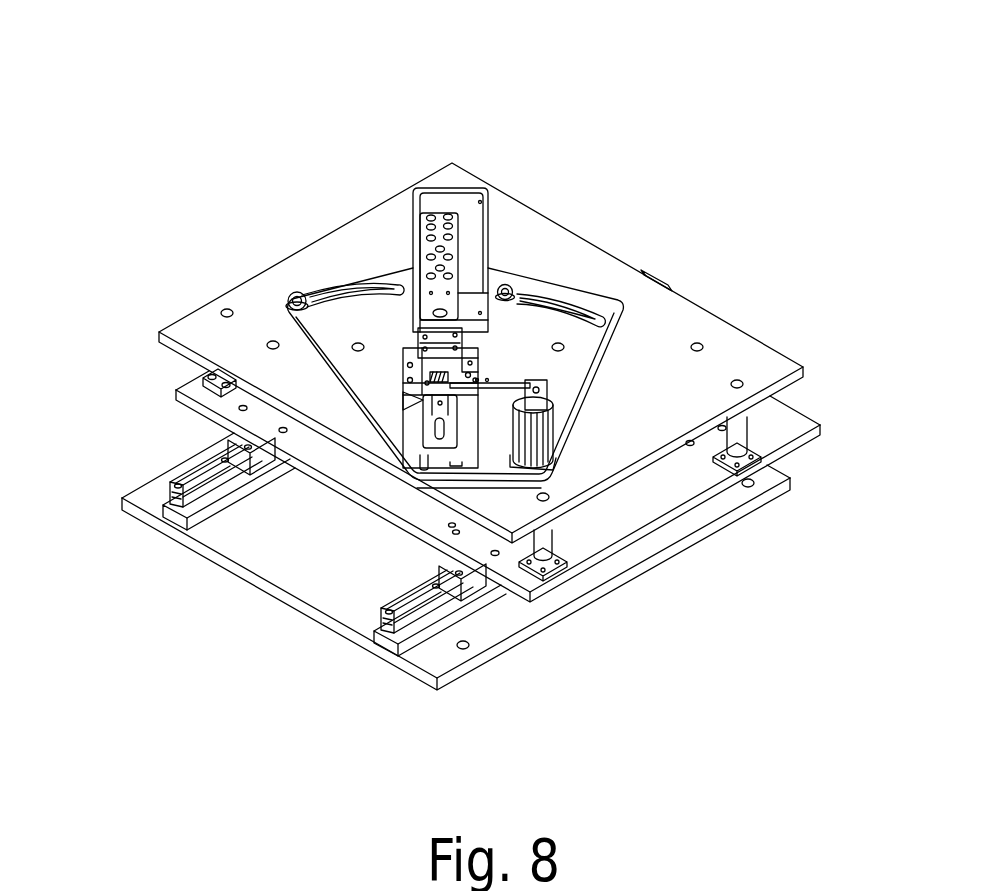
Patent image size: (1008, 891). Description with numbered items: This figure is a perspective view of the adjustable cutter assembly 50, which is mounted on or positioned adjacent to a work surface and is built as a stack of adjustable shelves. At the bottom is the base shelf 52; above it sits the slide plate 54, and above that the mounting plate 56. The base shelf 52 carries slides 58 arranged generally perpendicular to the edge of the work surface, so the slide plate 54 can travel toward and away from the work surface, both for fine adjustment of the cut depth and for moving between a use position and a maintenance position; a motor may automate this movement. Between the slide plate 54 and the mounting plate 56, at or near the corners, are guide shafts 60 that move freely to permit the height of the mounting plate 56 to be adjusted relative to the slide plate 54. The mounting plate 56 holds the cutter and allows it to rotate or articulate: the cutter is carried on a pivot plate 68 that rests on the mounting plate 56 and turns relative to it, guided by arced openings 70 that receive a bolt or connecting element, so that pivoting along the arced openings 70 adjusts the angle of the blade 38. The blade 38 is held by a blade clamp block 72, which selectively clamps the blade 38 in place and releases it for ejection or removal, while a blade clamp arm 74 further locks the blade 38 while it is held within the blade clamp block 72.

The cutter assembly 50 is at (520, 173).
The base shelf 52 is at (439, 692).
The slide plate 54 is at (193, 389).
The mounting plate 56 is at (687, 307).
The slides 58 is at (160, 513).
The guide shafts 60 is at (737, 435).
The pivot plate 68 is at (560, 292).
The arced openings 70 is at (350, 293).
The blade clamp block 72 is at (418, 417).
The blade 38 is at (427, 442).
The blade clamp arm 74 is at (504, 386).